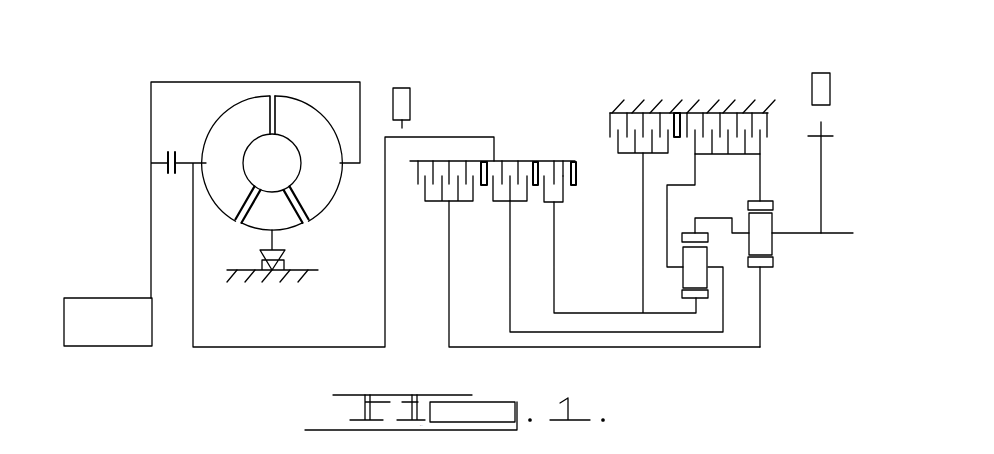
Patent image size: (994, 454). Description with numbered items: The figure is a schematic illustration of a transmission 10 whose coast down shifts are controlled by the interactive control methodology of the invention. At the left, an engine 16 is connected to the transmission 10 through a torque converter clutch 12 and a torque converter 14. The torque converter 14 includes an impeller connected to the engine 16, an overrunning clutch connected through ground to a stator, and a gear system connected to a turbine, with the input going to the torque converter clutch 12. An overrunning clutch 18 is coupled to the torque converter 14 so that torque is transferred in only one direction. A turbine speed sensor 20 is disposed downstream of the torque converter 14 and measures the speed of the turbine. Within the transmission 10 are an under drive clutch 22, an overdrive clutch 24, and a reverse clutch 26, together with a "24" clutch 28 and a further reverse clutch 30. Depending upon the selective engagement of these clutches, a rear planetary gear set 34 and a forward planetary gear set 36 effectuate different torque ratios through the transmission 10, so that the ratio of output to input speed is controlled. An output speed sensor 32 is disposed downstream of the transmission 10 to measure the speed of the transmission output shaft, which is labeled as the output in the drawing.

The transmission 10 is at (718, 381).
The torque converter clutch 12 is at (166, 146).
The torque converter 14 is at (293, 108).
The engine 16 is at (95, 300).
The overrunning clutch 18 is at (241, 292).
The turbine speed sensor 20 is at (402, 90).
The under drive clutch 22 is at (446, 150).
The overdrive clutch 24 is at (510, 150).
The reverse clutch 26 is at (560, 153).
The "24" clutch 28 is at (637, 98).
The reverse clutch 30 is at (730, 98).
The output speed sensor 32 is at (826, 85).
The rear planetary gear set 34 is at (779, 274).
The forward planetary gear set 36 is at (672, 277).